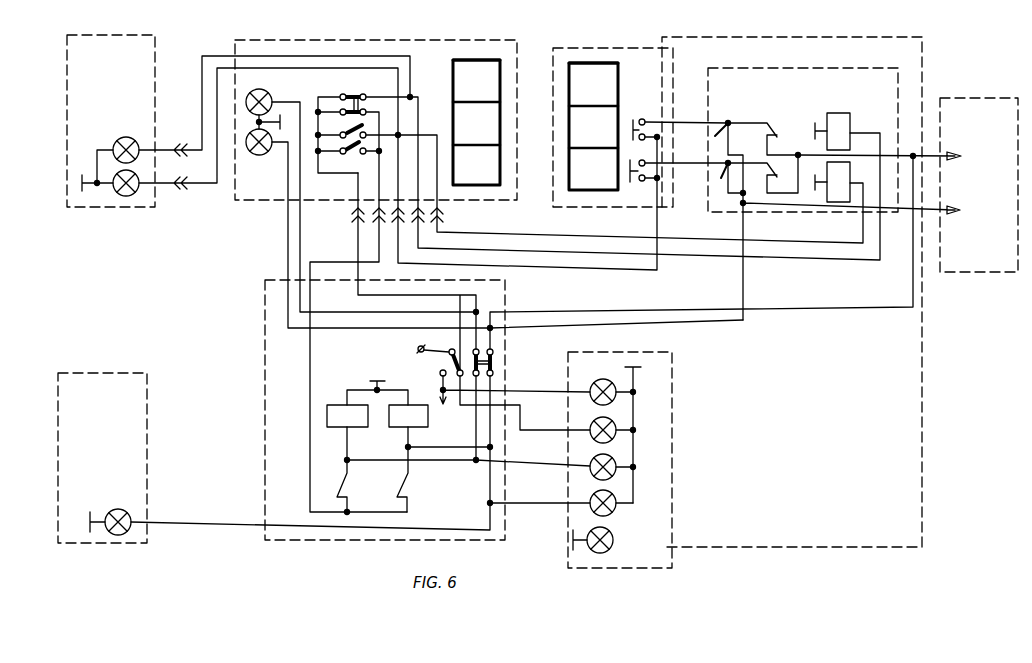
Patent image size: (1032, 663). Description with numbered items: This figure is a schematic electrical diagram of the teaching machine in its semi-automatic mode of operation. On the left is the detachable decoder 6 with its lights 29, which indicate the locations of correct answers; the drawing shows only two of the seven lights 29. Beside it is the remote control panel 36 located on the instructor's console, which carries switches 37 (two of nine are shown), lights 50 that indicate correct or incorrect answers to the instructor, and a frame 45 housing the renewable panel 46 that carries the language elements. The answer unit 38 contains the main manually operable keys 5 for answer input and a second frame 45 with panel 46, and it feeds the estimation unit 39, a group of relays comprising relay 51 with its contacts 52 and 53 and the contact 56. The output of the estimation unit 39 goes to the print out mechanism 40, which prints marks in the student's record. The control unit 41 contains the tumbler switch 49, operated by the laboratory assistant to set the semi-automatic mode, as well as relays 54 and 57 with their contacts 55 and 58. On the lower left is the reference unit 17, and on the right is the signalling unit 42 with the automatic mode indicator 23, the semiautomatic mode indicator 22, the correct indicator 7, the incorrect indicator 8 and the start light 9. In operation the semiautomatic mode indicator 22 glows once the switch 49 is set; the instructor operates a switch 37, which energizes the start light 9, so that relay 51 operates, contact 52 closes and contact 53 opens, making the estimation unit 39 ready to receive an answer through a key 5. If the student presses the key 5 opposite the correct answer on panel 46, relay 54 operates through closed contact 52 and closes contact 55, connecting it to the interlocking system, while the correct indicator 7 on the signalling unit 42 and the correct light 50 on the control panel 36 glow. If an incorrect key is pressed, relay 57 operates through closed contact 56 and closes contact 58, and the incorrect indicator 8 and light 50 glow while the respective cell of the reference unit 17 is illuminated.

The detachable decoder 6 is at (161, 64).
The lights 29 is at (125, 197).
The lights 50 is at (246, 140).
The switches 37 is at (347, 130).
The frame 45 is at (453, 83).
The panel 46 is at (473, 60).
The remote control panel 36 is at (521, 85).
The answer unit 38 is at (648, 42).
The main manually operable keys 5 is at (641, 119).
The contact 53 is at (720, 124).
The contact 52 is at (784, 150).
The relay 51 is at (840, 113).
The contact 56 is at (722, 176).
The estimation unit 39 is at (903, 77).
The print out mechanism 40 is at (965, 90).
The control unit 41 is at (506, 331).
The tumbler switch 49 is at (447, 357).
The relay 54 is at (333, 405).
The relay 57 is at (430, 421).
The contact 55 is at (355, 471).
The contact 58 is at (421, 469).
The reference unit 17 is at (155, 412).
The signalling unit 42 is at (680, 380).
The automatic mode indicator 23 is at (614, 386).
The semiautomatic mode indicator 22 is at (614, 423).
The correct indicator 7 is at (614, 460).
The incorrect indicator 8 is at (614, 497).
The semiautomatic mode start light 9 is at (611, 534).